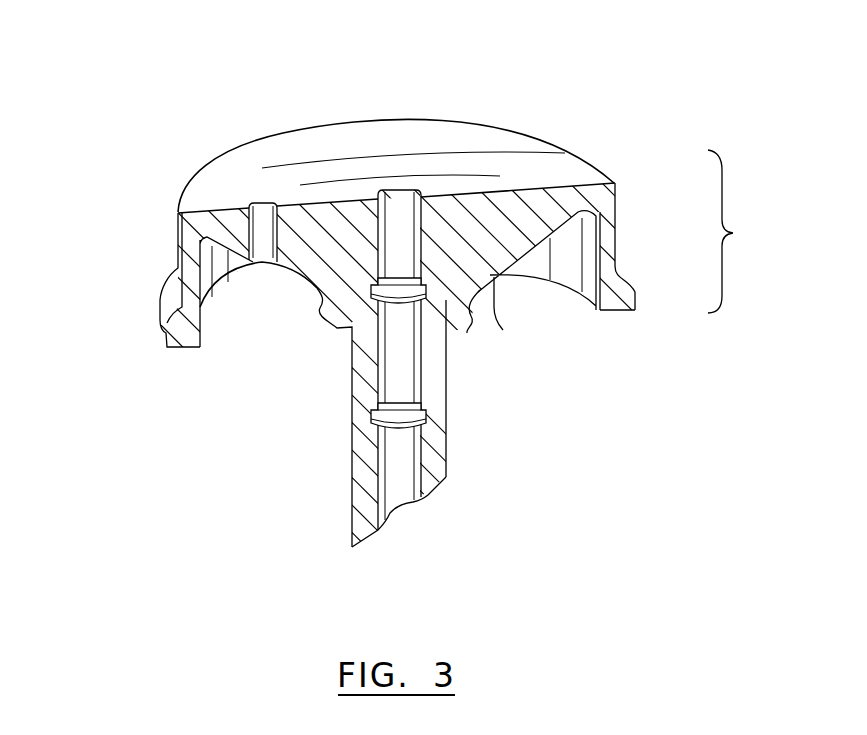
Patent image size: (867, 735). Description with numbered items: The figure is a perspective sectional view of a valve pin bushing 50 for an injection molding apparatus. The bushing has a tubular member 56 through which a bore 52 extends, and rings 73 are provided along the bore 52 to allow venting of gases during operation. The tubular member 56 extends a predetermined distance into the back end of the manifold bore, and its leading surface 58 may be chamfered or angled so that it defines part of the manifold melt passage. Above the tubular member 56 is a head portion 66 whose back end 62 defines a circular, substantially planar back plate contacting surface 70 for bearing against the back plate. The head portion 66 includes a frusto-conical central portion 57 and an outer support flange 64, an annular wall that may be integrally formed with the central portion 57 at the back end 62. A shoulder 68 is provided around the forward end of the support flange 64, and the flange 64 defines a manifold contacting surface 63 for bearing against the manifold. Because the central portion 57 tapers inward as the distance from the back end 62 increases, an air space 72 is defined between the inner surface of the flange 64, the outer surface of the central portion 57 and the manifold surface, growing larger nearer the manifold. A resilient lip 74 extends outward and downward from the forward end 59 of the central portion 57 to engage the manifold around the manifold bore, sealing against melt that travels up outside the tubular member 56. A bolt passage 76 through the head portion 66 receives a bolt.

The valve pin bushing 50 is at (527, 111).
The bore 52 is at (407, 454).
The tubular member 56 is at (356, 345).
The central portion 57 is at (520, 266).
The leading surface 58 is at (365, 547).
The forward end 59 is at (323, 285).
The back end 62 is at (425, 118).
The manifold contacting surface 63 is at (615, 312).
The outer support flange 64 is at (617, 245).
The head portion 66 is at (741, 231).
The shoulder 68 is at (164, 333).
The back plate contacting surface 70 is at (349, 148).
The air space 72 is at (222, 327).
The rings 73 is at (371, 417).
The resilient lip 74 is at (490, 326).
The bolt passage 76 is at (262, 212).